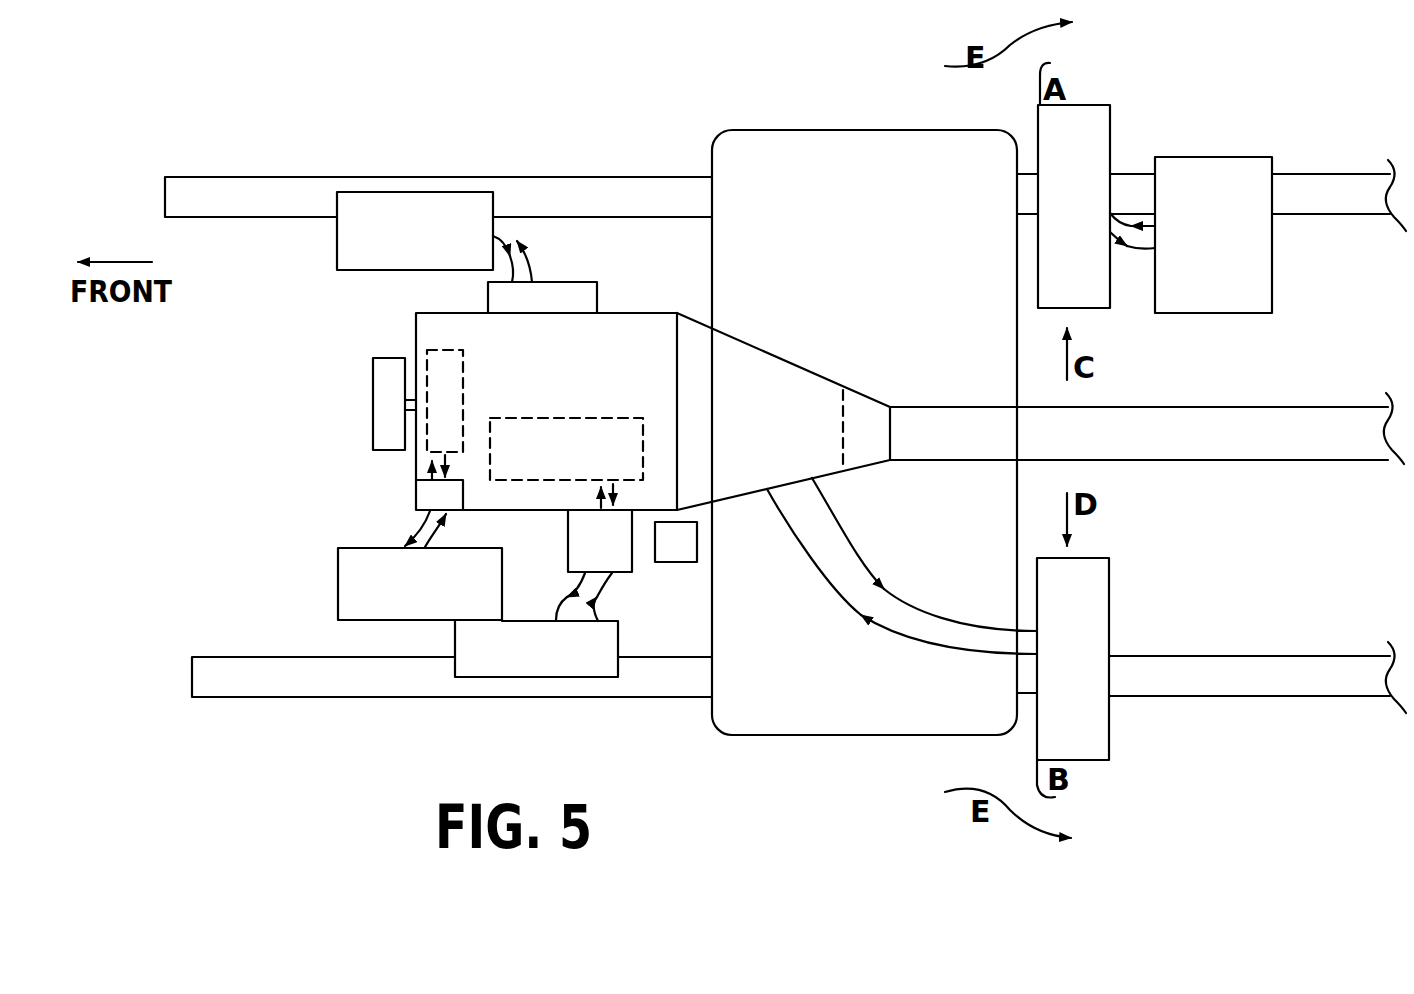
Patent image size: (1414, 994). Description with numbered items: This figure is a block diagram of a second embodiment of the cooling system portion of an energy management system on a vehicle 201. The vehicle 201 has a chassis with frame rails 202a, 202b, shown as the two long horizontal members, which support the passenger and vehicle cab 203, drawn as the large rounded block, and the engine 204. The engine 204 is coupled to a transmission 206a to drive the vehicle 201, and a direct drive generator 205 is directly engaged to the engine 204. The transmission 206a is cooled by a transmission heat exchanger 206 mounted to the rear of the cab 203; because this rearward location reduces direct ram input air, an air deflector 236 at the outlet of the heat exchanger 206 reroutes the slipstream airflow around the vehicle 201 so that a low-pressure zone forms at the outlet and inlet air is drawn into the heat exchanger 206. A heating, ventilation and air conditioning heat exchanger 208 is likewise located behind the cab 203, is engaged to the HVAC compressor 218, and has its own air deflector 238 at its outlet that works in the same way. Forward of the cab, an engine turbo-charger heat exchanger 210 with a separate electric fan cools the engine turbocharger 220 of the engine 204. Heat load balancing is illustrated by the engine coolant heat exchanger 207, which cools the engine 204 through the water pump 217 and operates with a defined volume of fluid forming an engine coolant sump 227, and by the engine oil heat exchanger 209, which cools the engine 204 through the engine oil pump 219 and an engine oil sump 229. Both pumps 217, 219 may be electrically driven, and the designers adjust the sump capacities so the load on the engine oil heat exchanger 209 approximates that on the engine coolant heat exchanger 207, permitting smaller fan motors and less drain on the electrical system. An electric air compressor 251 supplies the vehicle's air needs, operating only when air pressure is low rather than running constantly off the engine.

The vehicle 201 is at (665, 176).
The frame rail 202a is at (323, 702).
The frame rail 202b is at (262, 176).
The passenger and vehicle cab 203 is at (832, 129).
The engine 204 is at (413, 330).
The direct drive generator 205 is at (371, 413).
The transmission heat exchanger 206 is at (1113, 732).
The transmission 206a is at (790, 361).
The engine coolant heat exchanger 207 is at (582, 683).
The HVAC heat exchanger 208 is at (1114, 129).
The engine oil heat exchanger 209 is at (420, 627).
The engine turbo-charger heat exchanger 210 is at (416, 191).
The water pump 217 is at (637, 578).
The HVAC compressor 218 is at (1217, 155).
The engine oil pump 219 is at (414, 497).
The engine turbocharger 220 is at (562, 281).
The engine coolant sump 227 is at (607, 416).
The engine oil sump 229 is at (417, 456).
The air deflector 236 is at (1063, 800).
The air deflector 238 is at (1053, 58).
The electric air compressor 251 is at (690, 565).